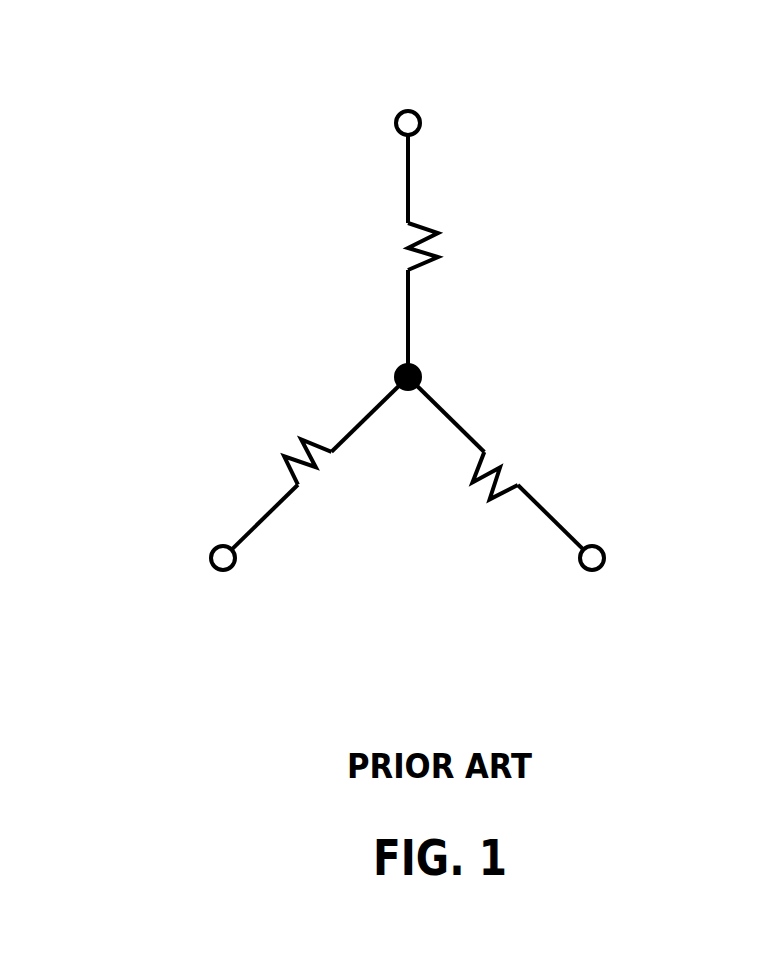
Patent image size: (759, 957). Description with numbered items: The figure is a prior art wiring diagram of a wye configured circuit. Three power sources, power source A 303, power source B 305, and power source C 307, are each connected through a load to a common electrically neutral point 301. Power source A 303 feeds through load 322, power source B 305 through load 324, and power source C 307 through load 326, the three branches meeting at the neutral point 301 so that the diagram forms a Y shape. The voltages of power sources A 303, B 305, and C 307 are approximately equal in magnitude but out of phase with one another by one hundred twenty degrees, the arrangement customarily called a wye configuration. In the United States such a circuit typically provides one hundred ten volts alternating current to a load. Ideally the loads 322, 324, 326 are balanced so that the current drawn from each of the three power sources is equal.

The electrically neutral point 301 is at (434, 365).
The power source A 303 is at (434, 117).
The power source B 305 is at (234, 590).
The power source C 307 is at (622, 551).
The load 322 is at (452, 239).
The load 324 is at (273, 444).
The load 326 is at (532, 462).